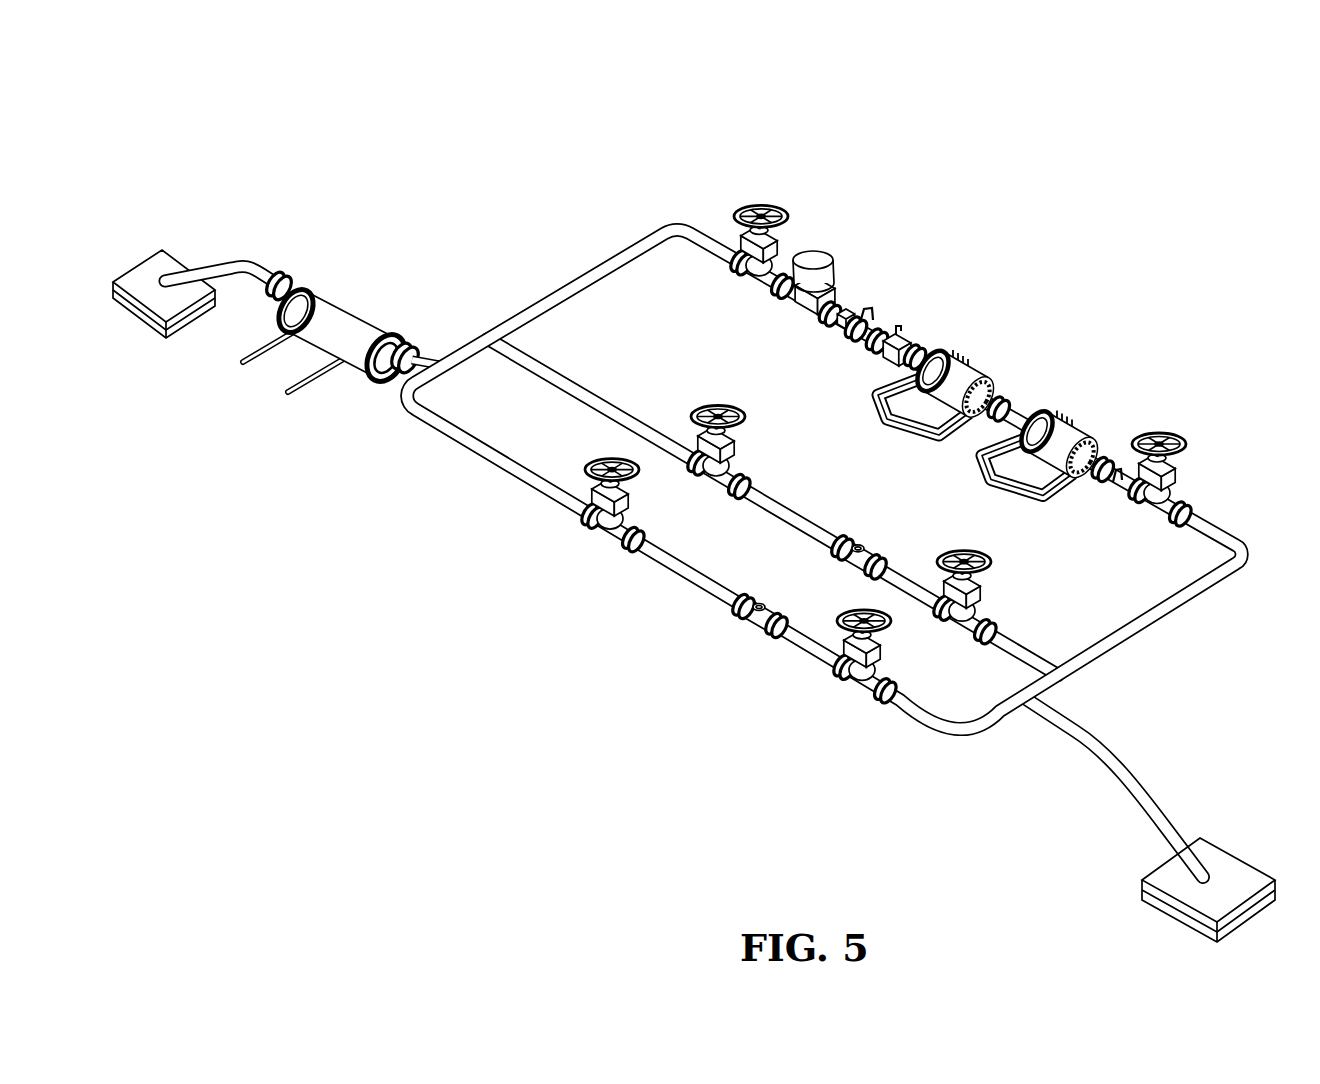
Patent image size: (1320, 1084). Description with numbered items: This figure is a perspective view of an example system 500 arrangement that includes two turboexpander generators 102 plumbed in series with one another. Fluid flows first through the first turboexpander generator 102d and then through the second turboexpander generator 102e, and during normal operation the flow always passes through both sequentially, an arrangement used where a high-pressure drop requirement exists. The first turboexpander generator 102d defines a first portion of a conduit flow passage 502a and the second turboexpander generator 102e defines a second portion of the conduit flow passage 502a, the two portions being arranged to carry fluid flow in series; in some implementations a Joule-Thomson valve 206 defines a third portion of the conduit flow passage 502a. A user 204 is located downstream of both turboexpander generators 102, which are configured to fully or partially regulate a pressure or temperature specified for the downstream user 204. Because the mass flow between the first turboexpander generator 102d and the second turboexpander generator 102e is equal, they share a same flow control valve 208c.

The system 500 is at (231, 137).
The flow control valve 208c is at (817, 252).
The conduit flow passage 502a is at (863, 310).
The first turboexpander generator 102d is at (967, 373).
The second turboexpander generator 102e is at (1067, 427).
The turboexpander generators 102 is at (1084, 394).
The Joule-Thomson valve 206 is at (861, 544).
The user 204 is at (1238, 876).